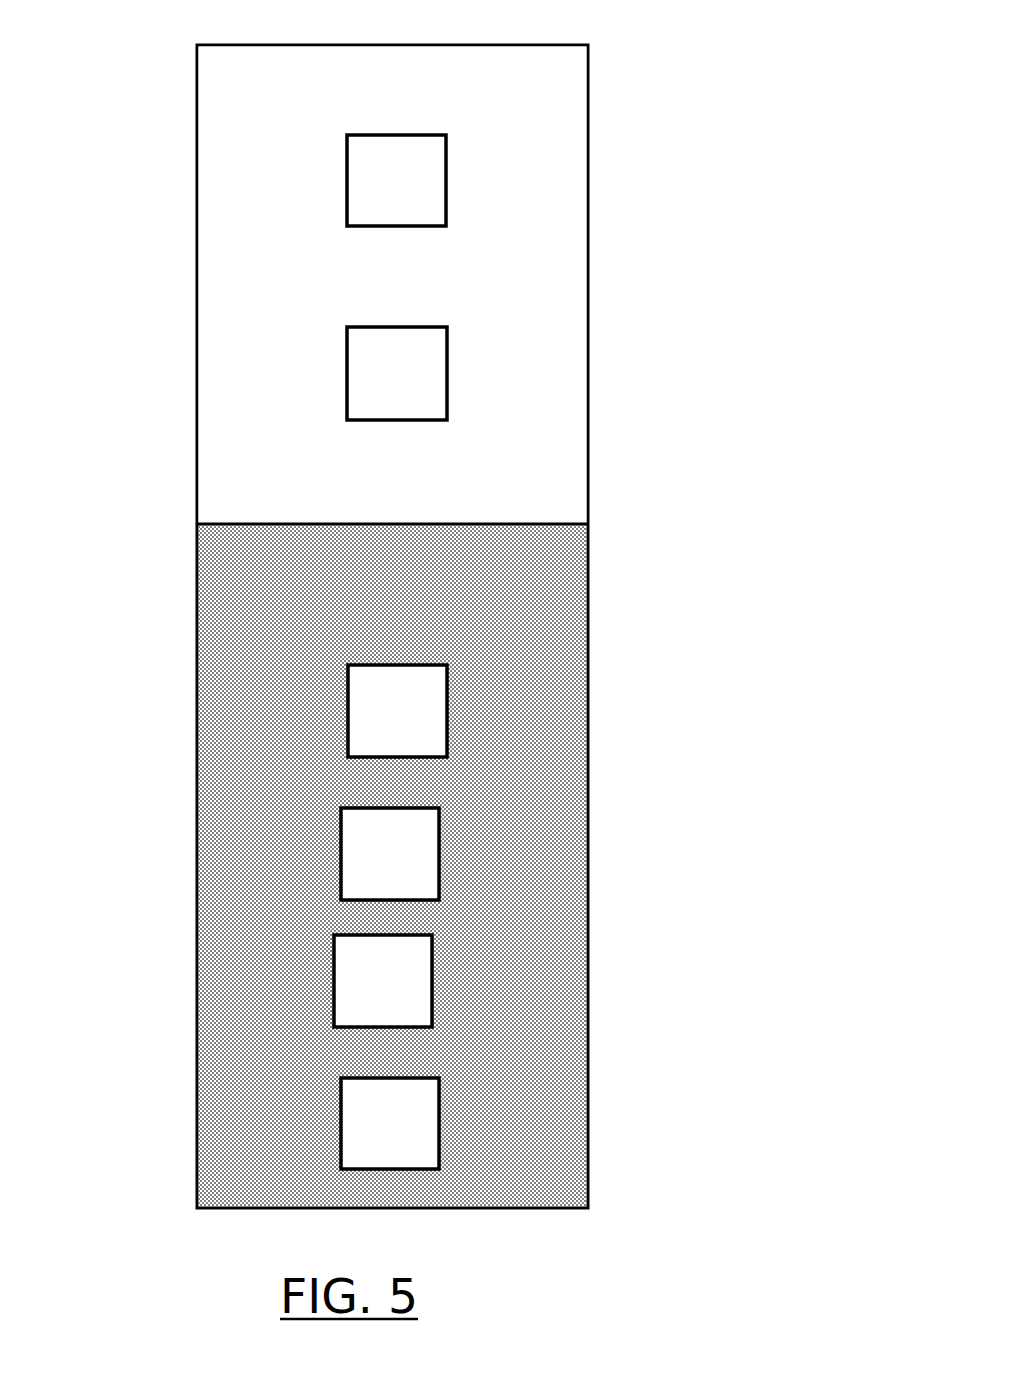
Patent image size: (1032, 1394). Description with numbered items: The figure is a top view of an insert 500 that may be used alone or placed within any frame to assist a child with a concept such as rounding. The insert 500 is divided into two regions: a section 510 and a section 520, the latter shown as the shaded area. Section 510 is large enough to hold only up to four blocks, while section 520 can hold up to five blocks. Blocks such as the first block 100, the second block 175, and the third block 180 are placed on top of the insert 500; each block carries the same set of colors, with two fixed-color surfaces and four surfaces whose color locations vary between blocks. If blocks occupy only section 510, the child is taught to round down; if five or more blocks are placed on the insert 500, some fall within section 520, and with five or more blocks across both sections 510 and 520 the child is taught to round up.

The insert 500 is at (778, 120).
The section 520 is at (228, 241).
The section 510 is at (240, 1050).
The second block 175 is at (446, 188).
The first block 100 is at (447, 383).
The third block 180 is at (447, 720).